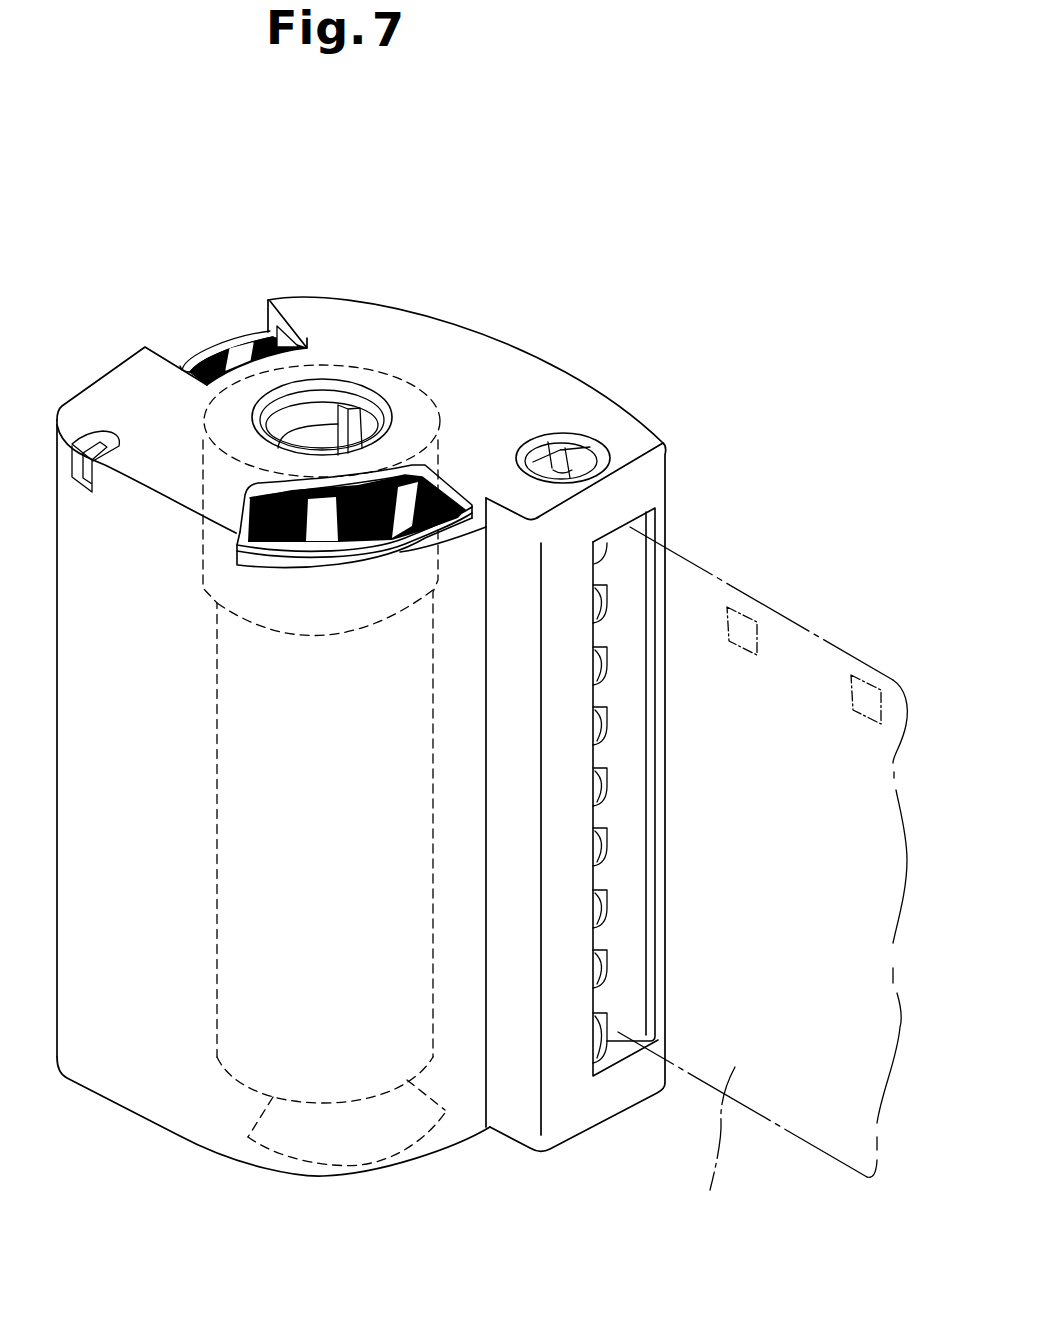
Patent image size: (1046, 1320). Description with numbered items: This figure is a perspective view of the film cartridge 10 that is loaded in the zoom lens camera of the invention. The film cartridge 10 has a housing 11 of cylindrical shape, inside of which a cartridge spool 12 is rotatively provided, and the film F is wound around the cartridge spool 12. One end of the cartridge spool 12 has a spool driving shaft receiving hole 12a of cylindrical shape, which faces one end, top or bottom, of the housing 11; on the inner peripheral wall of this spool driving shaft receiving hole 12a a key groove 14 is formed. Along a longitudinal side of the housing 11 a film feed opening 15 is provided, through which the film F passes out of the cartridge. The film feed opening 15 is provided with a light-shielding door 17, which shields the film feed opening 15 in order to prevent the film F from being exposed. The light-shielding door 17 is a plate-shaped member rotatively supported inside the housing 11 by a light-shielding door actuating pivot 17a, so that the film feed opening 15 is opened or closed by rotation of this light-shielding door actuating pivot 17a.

The film cartridge 10 is at (286, 276).
The housing 11 is at (477, 355).
The cartridge spool 12 is at (260, 990).
The spool driving shaft receiving hole 12a is at (296, 428).
The key groove 14 is at (351, 423).
The film feed opening 15 is at (628, 739).
The light-shielding door 17 is at (602, 608).
The light-shielding door actuating pivot 17a is at (585, 459).
The film F is at (762, 881).